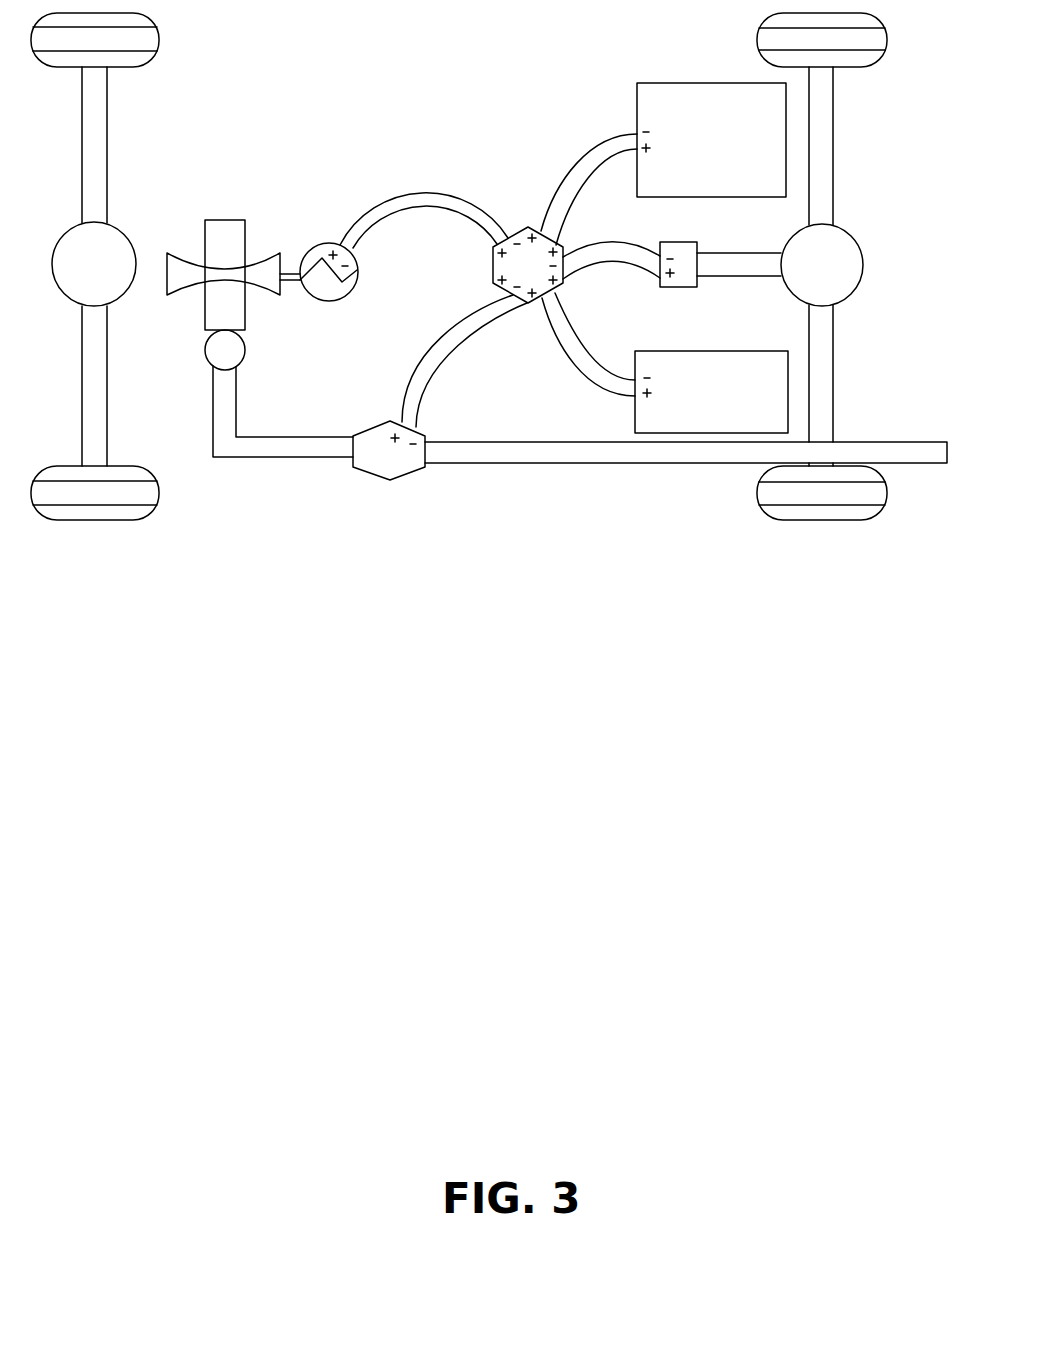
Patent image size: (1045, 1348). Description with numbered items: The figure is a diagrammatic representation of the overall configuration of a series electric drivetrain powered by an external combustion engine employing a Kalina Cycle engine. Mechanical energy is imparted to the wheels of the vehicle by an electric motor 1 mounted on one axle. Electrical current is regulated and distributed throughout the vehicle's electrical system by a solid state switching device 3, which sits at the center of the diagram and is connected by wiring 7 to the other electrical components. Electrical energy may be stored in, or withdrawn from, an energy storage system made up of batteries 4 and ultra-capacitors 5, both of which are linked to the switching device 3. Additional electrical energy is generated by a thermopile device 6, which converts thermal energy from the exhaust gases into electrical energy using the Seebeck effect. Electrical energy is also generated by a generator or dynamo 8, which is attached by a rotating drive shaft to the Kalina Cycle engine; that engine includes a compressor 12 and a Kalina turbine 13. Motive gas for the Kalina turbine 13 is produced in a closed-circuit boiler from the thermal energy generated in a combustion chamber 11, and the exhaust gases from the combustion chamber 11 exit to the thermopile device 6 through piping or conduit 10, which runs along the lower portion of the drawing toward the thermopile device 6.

The electric motor 1 is at (680, 242).
The solid state switching device 3 is at (528, 227).
The batteries 4 is at (637, 97).
The ultra-capacitors 5 is at (703, 351).
The thermopile device 6 is at (390, 480).
The wiring 7 is at (433, 350).
The generator or dynamo 8 is at (358, 273).
The piping or conduit 10 is at (258, 457).
The combustion chamber 11 is at (243, 352).
The compressor 12 is at (205, 233).
The Kalina turbine 13 is at (282, 262).